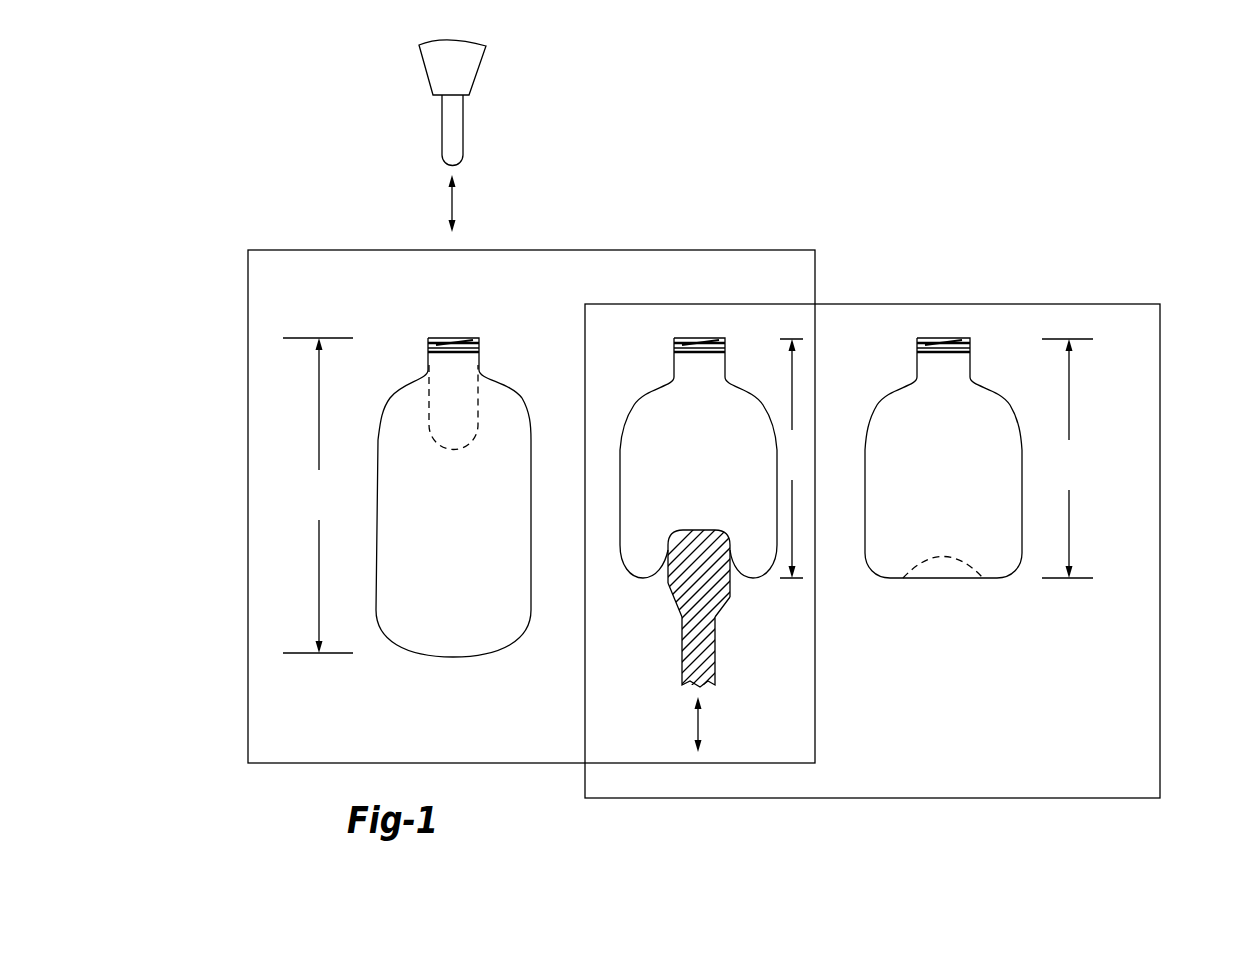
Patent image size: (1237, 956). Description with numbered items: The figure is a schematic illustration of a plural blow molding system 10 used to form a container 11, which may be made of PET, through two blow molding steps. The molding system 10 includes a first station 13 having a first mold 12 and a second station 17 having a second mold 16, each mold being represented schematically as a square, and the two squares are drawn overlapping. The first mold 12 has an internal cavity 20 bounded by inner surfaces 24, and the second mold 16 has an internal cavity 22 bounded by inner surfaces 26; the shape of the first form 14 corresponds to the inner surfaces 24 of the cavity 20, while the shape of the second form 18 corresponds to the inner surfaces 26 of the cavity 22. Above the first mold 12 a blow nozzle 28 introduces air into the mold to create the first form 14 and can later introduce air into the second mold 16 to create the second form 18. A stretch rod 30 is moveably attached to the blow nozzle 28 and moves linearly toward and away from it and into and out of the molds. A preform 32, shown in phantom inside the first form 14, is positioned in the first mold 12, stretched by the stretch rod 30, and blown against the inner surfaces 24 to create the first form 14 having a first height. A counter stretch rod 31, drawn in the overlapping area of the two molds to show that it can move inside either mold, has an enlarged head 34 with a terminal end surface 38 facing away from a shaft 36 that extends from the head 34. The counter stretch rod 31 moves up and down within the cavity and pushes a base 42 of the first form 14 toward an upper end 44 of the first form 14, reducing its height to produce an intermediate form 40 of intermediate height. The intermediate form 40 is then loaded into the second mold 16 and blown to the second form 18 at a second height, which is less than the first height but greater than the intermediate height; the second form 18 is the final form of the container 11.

The molding system 10 is at (986, 198).
The container 11 is at (1008, 381).
The first mold 12 is at (270, 697).
The first station 13 is at (281, 226).
The first form 14 is at (491, 378).
The second mold 16 is at (1155, 785).
The second station 17 is at (1101, 281).
The second form 18 is at (894, 377).
The internal cavity 20 is at (437, 625).
The internal cavity 22 is at (886, 551).
The inner surfaces 24 is at (527, 453).
The inner surfaces 26 is at (868, 454).
The blow nozzle 28 is at (473, 78).
The stretch rod 30 is at (460, 125).
The counter stretch rod 31 is at (695, 583).
The preform 32 is at (430, 413).
The head 34 is at (685, 582).
The shaft 36 is at (682, 652).
The terminal end surface 38 is at (703, 530).
The intermediate form 40 is at (641, 384).
The base 42 is at (753, 579).
The upper end 44 is at (737, 378).